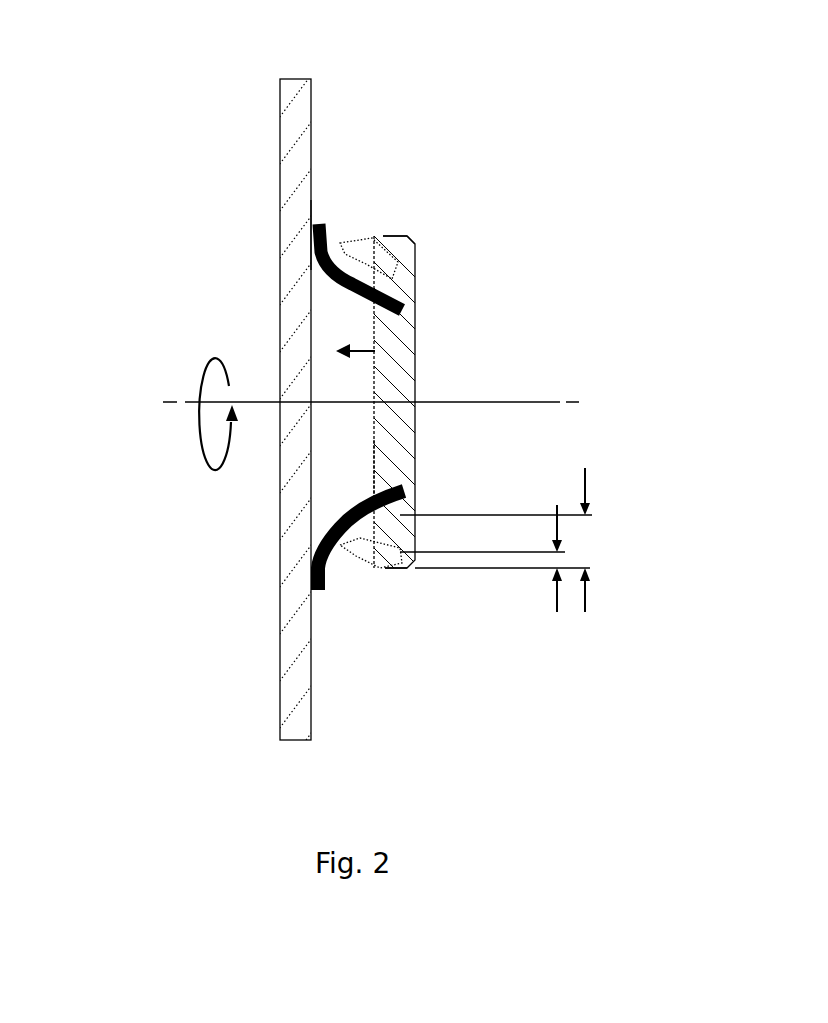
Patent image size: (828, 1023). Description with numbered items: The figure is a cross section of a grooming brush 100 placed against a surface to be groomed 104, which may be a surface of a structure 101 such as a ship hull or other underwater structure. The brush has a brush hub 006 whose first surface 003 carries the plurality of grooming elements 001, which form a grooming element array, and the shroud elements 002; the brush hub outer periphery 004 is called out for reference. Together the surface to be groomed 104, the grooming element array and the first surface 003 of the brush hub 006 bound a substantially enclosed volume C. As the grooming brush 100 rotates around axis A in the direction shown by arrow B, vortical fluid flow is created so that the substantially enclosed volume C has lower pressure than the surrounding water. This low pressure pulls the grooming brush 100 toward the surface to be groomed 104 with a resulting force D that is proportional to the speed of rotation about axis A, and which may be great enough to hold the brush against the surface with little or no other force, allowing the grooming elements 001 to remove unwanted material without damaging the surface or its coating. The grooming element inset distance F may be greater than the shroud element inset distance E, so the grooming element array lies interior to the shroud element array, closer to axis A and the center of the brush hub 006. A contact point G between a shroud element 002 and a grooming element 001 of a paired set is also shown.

The grooming brush 100 is at (508, 366).
The structure 101 is at (293, 235).
The surface to be groomed 104 is at (311, 108).
The grooming element 001 is at (336, 228).
The shroud element 002 is at (362, 237).
The first surface 003 is at (375, 470).
The brush hub outer periphery 004 is at (408, 238).
The brush hub 006 is at (420, 244).
The axis A is at (171, 403).
The arrow B is at (209, 414).
The substantially enclosed volume C is at (350, 380).
The resulting force D is at (351, 340).
The shroud element inset distance E is at (496, 544).
The grooming element inset distance F is at (502, 528).
The contact point G is at (335, 253).